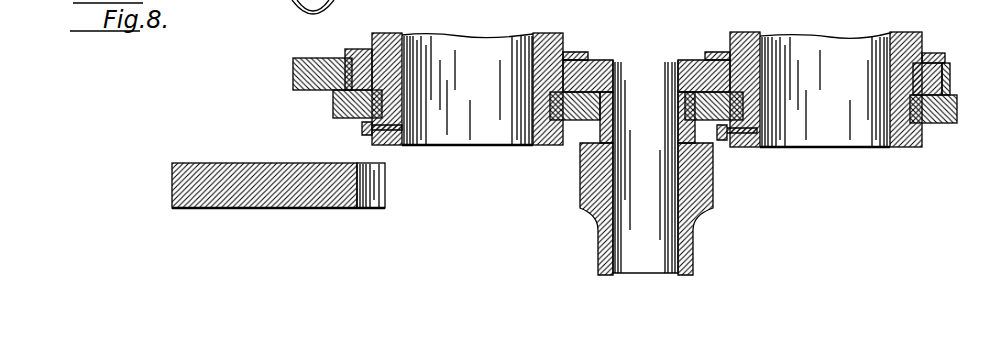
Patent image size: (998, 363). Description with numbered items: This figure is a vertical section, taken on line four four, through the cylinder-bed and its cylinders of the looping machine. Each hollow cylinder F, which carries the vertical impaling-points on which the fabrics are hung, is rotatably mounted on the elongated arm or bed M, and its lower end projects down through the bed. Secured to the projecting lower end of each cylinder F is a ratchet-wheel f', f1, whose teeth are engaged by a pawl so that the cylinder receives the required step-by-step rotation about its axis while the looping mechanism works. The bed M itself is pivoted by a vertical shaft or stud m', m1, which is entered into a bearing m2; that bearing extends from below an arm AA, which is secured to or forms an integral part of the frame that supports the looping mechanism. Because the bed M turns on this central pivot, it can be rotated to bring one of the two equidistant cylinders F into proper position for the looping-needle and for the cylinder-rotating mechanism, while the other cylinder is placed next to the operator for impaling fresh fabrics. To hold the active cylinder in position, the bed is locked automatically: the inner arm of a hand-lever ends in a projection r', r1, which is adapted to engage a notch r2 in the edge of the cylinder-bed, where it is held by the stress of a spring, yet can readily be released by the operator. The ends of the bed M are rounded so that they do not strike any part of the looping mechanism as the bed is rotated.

The hollow cylinder F is at (472, 70).
The projection r' is at (322, 62).
The projection r1 is at (322, 62).
The notch r2 is at (354, 60).
The ratchet-wheel f' is at (639, 106).
The ratchet-wheel f1 is at (337, 107).
The bed M is at (598, 60).
The vertical shaft or stud m' is at (647, 166).
The vertical shaft or stud m1 is at (647, 166).
The bearing m2 is at (708, 166).
The arm AA is at (278, 173).